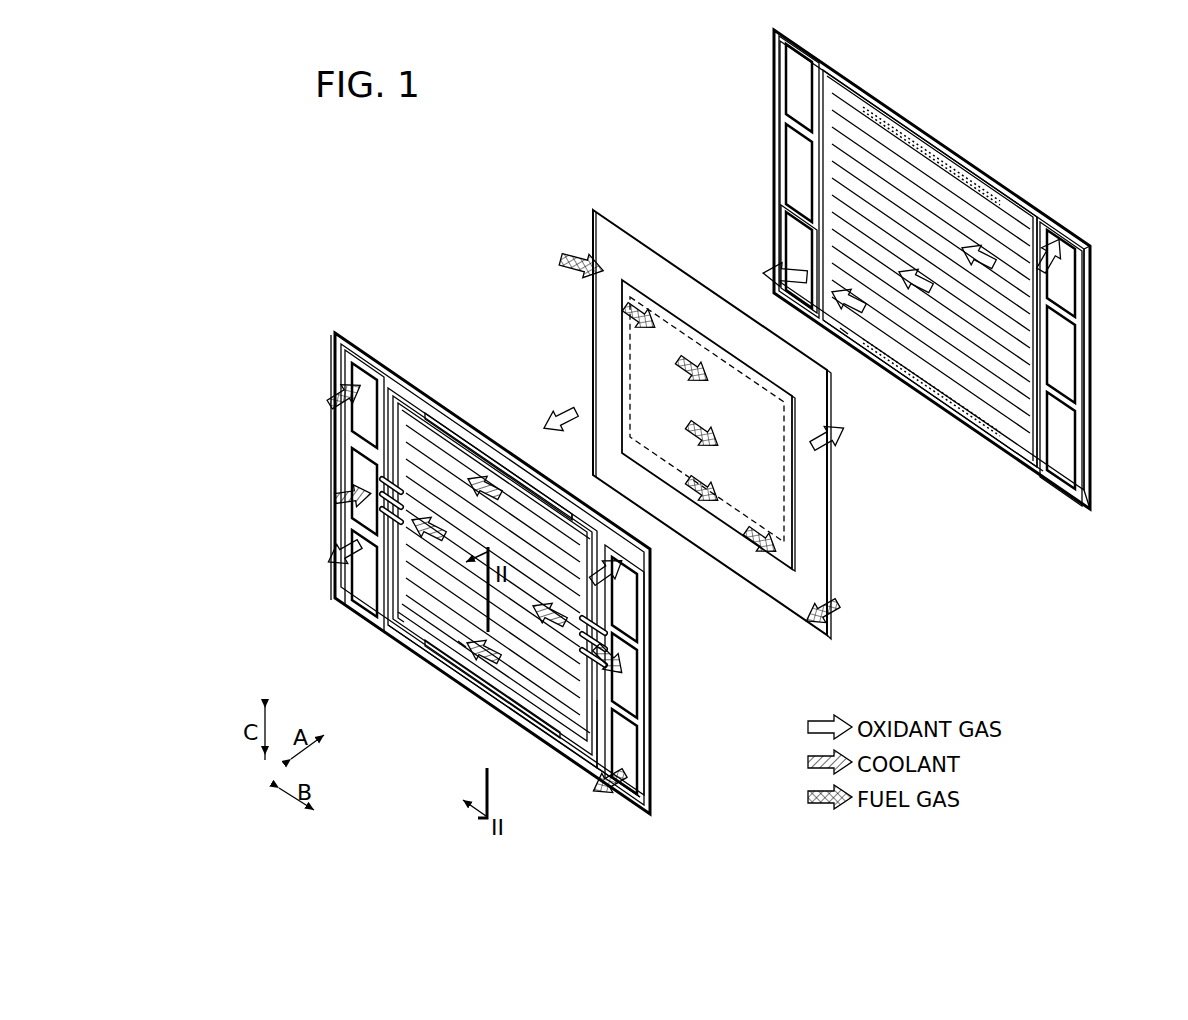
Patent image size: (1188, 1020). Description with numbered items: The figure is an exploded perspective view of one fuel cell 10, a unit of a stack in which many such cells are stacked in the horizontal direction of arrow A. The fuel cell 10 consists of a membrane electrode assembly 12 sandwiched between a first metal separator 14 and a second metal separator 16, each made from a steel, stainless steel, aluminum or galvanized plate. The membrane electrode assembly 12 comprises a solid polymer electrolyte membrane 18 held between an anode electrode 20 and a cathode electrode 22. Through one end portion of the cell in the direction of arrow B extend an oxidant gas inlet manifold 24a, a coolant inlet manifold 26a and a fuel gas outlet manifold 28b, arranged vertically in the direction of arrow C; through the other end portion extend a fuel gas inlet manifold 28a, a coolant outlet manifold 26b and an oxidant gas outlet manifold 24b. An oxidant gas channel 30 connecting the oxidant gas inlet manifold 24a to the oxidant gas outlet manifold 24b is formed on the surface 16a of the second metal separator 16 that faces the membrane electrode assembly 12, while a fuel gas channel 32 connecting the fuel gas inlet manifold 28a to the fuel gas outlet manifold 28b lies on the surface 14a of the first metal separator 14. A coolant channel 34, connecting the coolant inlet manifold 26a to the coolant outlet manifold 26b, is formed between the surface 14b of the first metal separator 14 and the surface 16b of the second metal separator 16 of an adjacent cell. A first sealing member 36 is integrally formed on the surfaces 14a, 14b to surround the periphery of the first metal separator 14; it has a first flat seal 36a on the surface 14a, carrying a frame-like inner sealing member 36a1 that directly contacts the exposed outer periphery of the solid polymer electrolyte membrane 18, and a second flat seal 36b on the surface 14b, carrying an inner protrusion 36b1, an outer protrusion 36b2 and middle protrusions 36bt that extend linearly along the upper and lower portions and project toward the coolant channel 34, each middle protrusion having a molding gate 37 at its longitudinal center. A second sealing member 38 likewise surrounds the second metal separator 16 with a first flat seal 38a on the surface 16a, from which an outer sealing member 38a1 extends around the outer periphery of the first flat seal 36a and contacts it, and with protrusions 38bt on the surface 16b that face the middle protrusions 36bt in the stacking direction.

The fuel cell 10 is at (455, 131).
The membrane electrode assembly 12 is at (593, 214).
The first metal separator 14 is at (335, 330).
The surface of the first metal separator 14a is at (450, 680).
The surface of the first metal separator 14b is at (420, 655).
The second metal separator 16 is at (797, 44).
The surface of the second metal separator 16a is at (1086, 486).
The surface of the second metal separator 16b is at (1082, 506).
The solid polymer electrolyte membrane 18 is at (815, 510).
The anode electrode 20 is at (800, 445).
The cathode electrode 22 is at (830, 545).
The oxidant gas inlet manifold 24a is at (608, 575).
The oxidant gas outlet manifold 24b is at (352, 545).
The coolant inlet manifold 26a is at (625, 690).
The coolant outlet manifold 26b is at (352, 470).
The fuel gas inlet manifold 28a is at (352, 372).
The fuel gas outlet manifold 28b is at (620, 745).
The oxidant gas channel 30 is at (880, 150).
The fuel gas channel 32 is at (515, 520).
The coolant channel 34 is at (458, 470).
The first sealing member 36 is at (415, 395).
The first flat seal 36a is at (650, 775).
The inner sealing member 36a1 is at (572, 520).
The second flat seal 36b is at (640, 795).
The inner protrusion 36b1 is at (418, 610).
The outer protrusion 36b2 is at (462, 690).
The middle protrusions 36bt is at (440, 425).
The molding gate 37 is at (490, 460).
The second sealing member 38 is at (1031, 472).
The first flat seal 38a is at (1055, 482).
The outer sealing member 38a1 is at (853, 345).
The protrusions 38bt is at (985, 185).